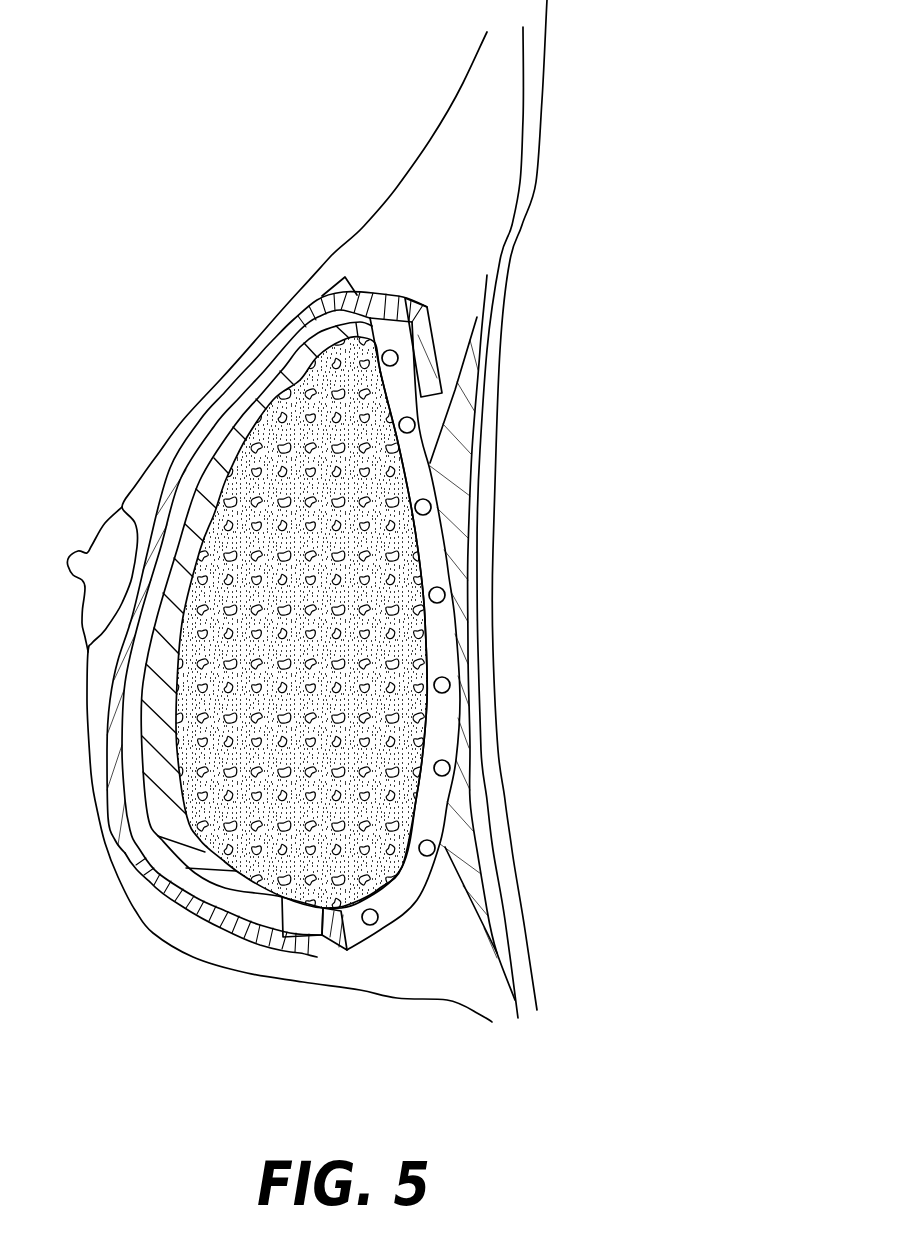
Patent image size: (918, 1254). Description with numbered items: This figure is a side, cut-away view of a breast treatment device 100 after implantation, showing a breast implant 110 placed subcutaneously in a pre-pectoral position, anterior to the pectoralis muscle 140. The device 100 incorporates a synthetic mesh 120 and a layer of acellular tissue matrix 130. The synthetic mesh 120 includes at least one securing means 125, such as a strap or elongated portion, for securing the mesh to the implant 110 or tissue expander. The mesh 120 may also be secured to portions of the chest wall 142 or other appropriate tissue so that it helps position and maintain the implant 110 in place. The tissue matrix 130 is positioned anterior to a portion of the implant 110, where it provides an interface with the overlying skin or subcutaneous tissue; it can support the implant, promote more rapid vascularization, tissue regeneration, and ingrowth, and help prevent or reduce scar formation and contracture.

The breast treatment device 100 is at (295, 452).
The implant 110 is at (288, 957).
The synthetic mesh 120 is at (447, 723).
The securing means 125 is at (125, 853).
The layer of acellular tissue matrix 130 is at (200, 513).
The pectoral muscle 140 is at (460, 485).
The chest wall 142 is at (523, 182).